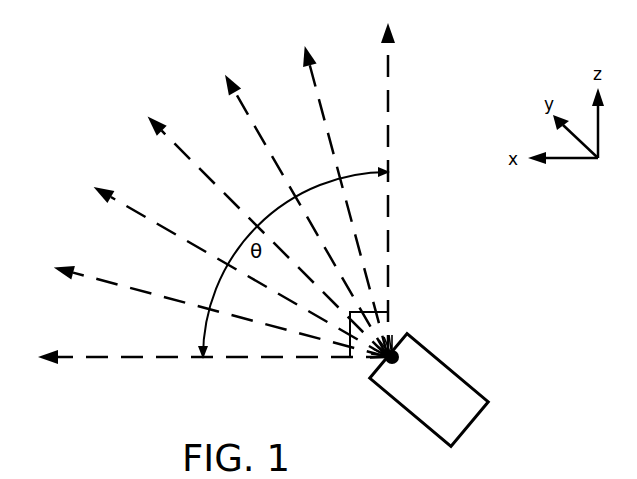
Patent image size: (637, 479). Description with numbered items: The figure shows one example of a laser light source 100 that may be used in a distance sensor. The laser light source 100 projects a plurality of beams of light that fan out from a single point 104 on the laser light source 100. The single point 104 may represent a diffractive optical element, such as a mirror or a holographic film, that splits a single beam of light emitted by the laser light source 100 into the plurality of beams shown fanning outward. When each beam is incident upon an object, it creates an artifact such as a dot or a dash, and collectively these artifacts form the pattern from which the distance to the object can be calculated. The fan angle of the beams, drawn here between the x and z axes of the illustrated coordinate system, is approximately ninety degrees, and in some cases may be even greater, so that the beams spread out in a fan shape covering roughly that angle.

The laser light source 100 is at (429, 390).
The single point 104 is at (397, 342).